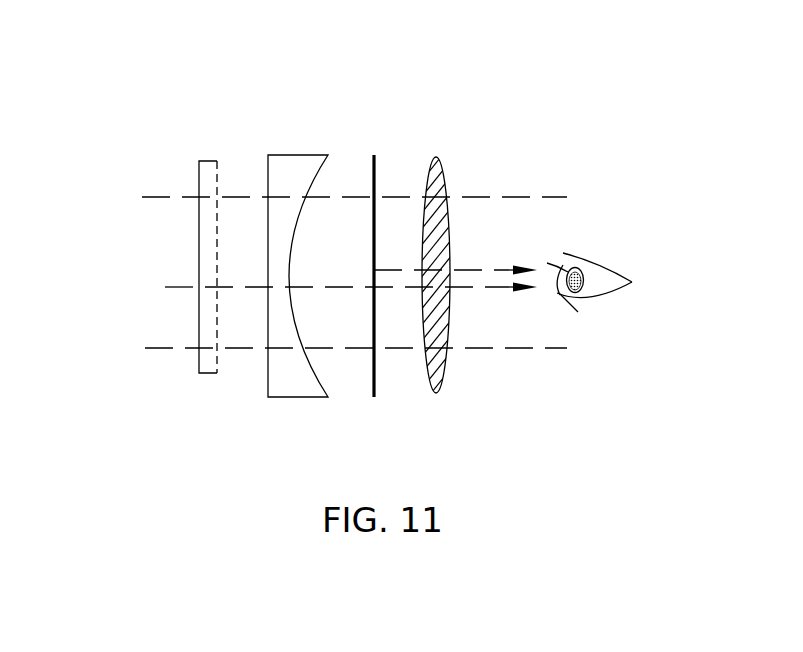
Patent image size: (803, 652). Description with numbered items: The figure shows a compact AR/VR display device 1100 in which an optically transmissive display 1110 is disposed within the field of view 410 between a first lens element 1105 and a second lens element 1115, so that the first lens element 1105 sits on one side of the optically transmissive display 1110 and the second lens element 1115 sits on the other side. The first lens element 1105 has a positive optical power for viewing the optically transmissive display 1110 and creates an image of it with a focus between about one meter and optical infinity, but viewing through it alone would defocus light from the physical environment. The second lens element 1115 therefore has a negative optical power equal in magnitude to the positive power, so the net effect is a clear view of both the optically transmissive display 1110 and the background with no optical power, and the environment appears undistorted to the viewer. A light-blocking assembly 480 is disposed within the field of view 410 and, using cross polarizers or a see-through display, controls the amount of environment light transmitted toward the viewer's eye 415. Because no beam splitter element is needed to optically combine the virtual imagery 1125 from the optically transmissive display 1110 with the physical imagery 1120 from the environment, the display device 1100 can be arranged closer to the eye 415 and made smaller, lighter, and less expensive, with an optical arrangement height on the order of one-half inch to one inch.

The compact AR/VR display device 1100 is at (593, 130).
The field of view 410 is at (137, 223).
The physical imagery 1120 is at (178, 288).
The light-blocking assembly 480 is at (205, 376).
The second lens element 1115 is at (294, 155).
The optically transmissive display 1110 is at (374, 157).
The first lens element 1105 is at (435, 155).
The virtual imagery 1125 is at (374, 267).
The eye 415 is at (597, 262).